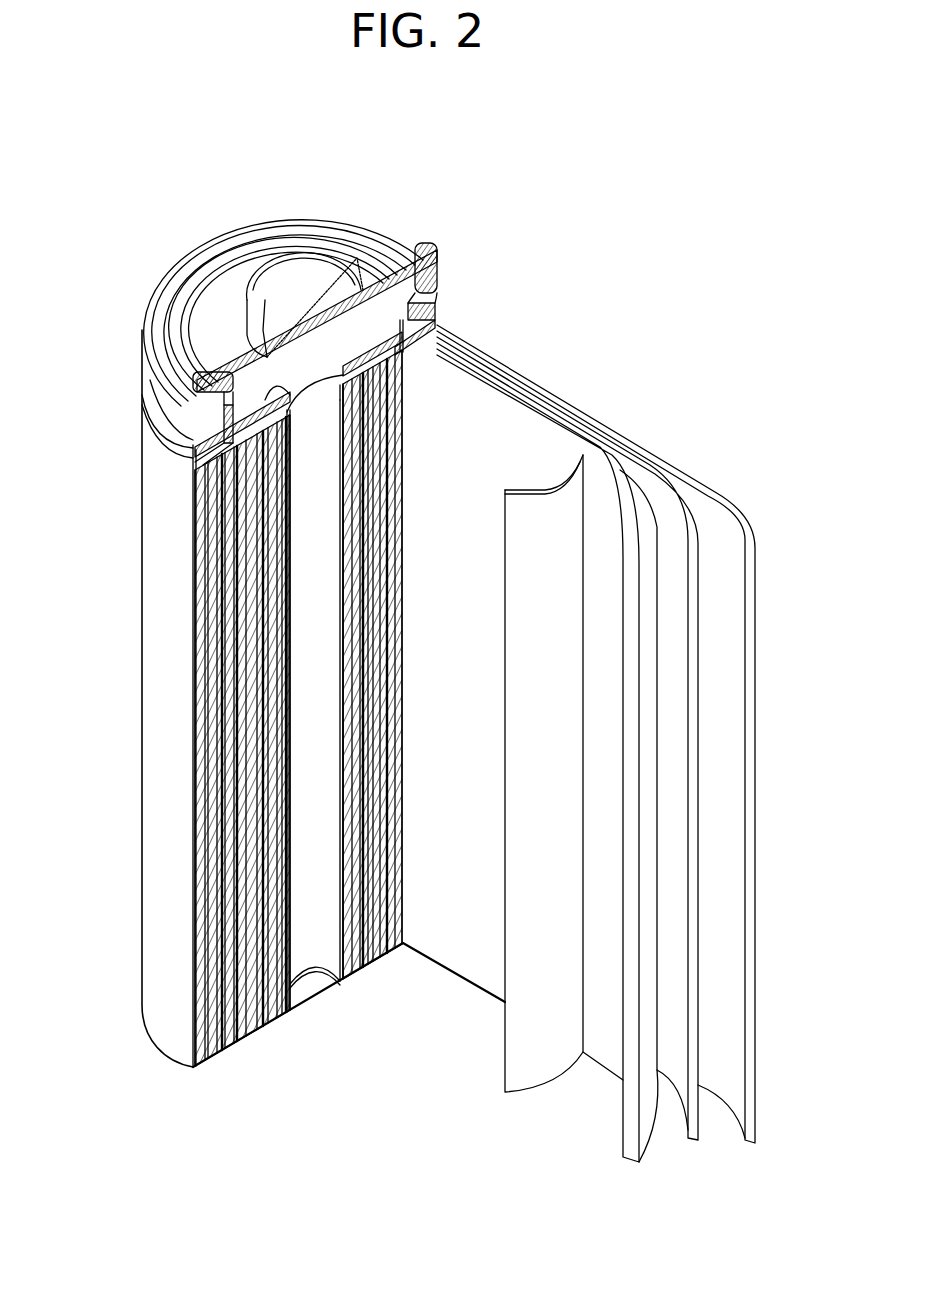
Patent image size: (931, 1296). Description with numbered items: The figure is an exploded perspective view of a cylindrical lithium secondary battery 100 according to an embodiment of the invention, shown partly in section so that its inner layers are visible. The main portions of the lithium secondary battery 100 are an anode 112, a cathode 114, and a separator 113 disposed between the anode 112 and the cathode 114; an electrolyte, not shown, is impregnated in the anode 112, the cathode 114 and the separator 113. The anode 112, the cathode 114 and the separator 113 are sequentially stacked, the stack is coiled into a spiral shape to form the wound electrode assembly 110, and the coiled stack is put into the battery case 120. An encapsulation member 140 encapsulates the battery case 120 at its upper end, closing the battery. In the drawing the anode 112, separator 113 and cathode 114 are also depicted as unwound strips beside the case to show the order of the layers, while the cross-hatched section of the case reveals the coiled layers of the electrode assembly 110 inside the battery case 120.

The lithium secondary battery 100 is at (391, 150).
The electrode assembly 110 is at (298, 708).
The anode 112 is at (735, 498).
The separator 113 is at (545, 495).
The cathode 114 is at (640, 500).
The battery case 120 is at (148, 693).
The encapsulation member 140 is at (277, 265).